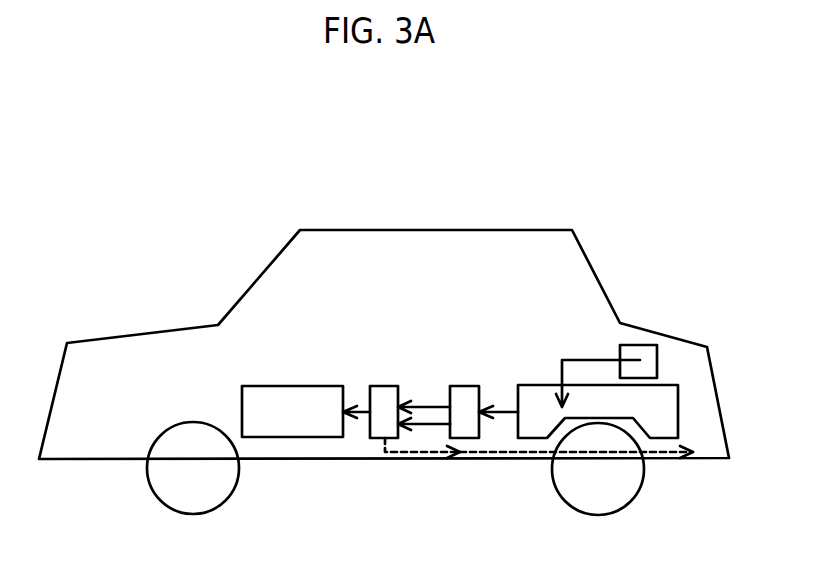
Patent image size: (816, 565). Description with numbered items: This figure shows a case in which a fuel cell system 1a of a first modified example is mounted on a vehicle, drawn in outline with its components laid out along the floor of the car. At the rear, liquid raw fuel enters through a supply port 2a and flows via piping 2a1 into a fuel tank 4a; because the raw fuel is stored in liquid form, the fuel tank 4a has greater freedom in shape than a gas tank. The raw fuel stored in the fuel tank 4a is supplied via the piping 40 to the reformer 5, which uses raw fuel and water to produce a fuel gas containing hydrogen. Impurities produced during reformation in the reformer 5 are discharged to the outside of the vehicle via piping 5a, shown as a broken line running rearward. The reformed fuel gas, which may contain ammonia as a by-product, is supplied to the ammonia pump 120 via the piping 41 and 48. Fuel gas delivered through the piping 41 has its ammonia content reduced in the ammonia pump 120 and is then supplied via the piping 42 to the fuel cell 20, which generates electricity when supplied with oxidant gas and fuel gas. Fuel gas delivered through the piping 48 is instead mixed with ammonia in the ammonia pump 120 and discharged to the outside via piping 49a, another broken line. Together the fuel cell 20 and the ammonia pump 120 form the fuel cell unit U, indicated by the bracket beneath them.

The fuel cell system 1a is at (520, 326).
The supply port 2a is at (657, 357).
The piping 2a1 is at (585, 360).
The fuel tank 4a is at (678, 405).
The reformer 5 is at (475, 379).
The piping 5a is at (530, 452).
The fuel cell 20 is at (293, 437).
The piping 40 is at (508, 413).
The piping 41 is at (447, 403).
The piping 42 is at (371, 404).
The piping 48 is at (425, 423).
The piping 49a is at (425, 452).
The ammonia pump 120 is at (361, 421).
The fuel cell unit U is at (320, 440).